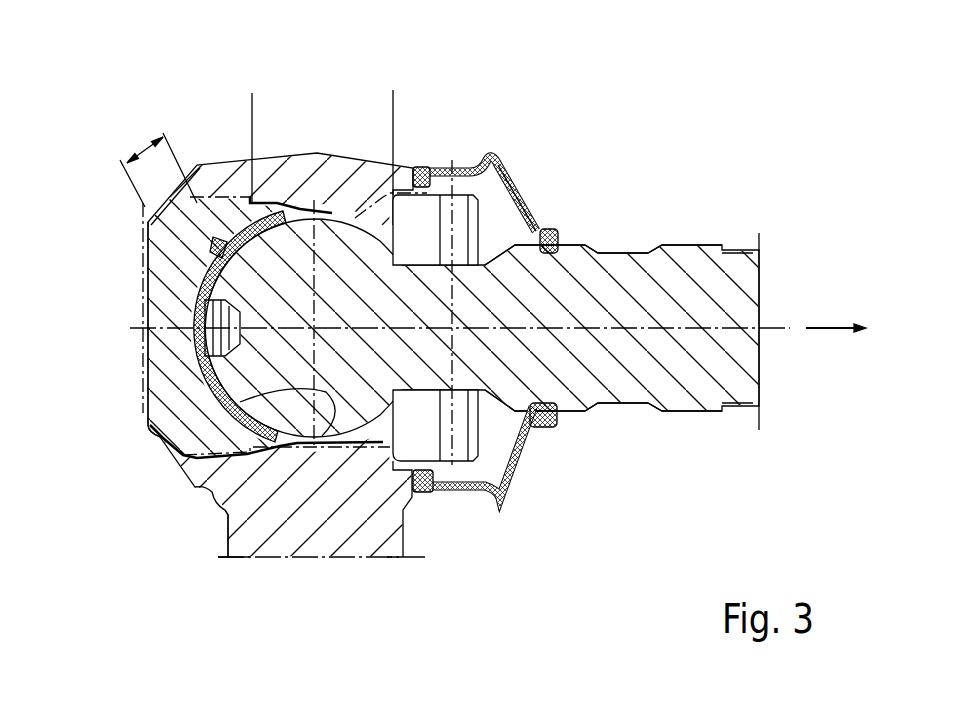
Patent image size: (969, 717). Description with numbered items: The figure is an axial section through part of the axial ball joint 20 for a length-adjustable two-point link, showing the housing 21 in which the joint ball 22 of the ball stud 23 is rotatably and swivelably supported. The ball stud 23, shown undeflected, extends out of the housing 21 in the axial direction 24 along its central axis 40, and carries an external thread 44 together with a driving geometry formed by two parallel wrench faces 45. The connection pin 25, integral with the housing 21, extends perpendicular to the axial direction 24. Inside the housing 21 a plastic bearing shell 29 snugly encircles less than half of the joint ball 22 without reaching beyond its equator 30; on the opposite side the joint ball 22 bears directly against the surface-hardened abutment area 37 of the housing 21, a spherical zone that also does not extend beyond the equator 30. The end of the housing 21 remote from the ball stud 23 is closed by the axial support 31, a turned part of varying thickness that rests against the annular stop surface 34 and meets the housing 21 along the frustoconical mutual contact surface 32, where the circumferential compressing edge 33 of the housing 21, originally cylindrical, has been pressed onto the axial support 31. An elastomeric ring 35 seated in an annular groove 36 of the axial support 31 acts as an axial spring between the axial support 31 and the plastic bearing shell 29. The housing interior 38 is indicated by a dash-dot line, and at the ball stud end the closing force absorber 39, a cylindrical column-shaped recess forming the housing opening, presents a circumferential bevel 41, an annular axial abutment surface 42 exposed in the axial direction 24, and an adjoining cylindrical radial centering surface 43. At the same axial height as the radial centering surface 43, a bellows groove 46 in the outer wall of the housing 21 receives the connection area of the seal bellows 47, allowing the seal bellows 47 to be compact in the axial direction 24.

The axial ball joint 20 is at (578, 183).
The housing 21 is at (333, 133).
The joint ball 22 is at (167, 442).
The ball stud 23 is at (691, 230).
The axial direction 24 is at (823, 330).
The connection pin 25 is at (212, 544).
The plastic bearing shell 29 is at (200, 377).
The equator 30 is at (295, 378).
The axial support 31 is at (167, 300).
The mutual contact surface 32 is at (145, 158).
The circumferential compressing edge 33 is at (165, 453).
The stop surface 34 is at (252, 117).
The elastomeric ring 35 is at (215, 253).
The annular groove 36 is at (190, 240).
The abutment area 37 is at (285, 390).
The housing interior 38 is at (483, 487).
The closing force absorber 39 is at (432, 230).
The central axis 40 is at (800, 328).
The circumferential bevel 41 is at (450, 187).
The axial abutment surface 42 is at (405, 112).
The radial centering surface 43 is at (405, 445).
The external thread 44 is at (742, 243).
The wrench faces 45 is at (615, 250).
The bellows groove 46 is at (440, 507).
The seal bellows 47 is at (535, 430).